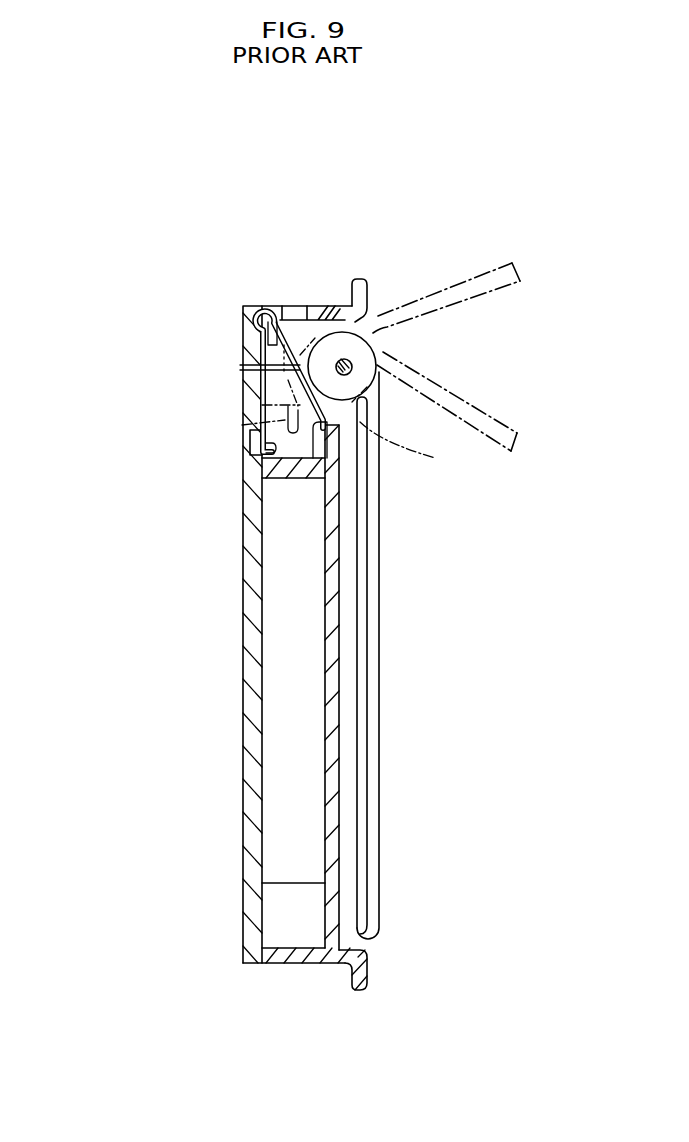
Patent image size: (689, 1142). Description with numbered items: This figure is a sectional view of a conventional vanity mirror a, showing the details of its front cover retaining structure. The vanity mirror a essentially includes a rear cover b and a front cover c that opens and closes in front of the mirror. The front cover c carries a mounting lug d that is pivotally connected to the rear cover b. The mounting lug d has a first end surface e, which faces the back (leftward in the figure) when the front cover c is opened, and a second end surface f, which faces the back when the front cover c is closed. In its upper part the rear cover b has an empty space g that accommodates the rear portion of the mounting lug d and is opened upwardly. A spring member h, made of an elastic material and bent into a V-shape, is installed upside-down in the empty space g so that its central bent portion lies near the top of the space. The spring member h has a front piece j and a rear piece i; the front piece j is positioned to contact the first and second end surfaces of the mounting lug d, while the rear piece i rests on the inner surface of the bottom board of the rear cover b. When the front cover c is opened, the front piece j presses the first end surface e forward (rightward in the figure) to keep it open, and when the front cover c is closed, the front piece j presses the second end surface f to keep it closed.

The vanity mirror a is at (194, 294).
The rear cover b is at (243, 635).
The front cover c is at (494, 270).
The mounting lug d is at (324, 348).
The first end surface e is at (295, 310).
The second end surface f is at (300, 368).
The empty space g is at (268, 358).
The spring member h is at (282, 304).
The rear piece i is at (262, 463).
The front piece j is at (311, 432).